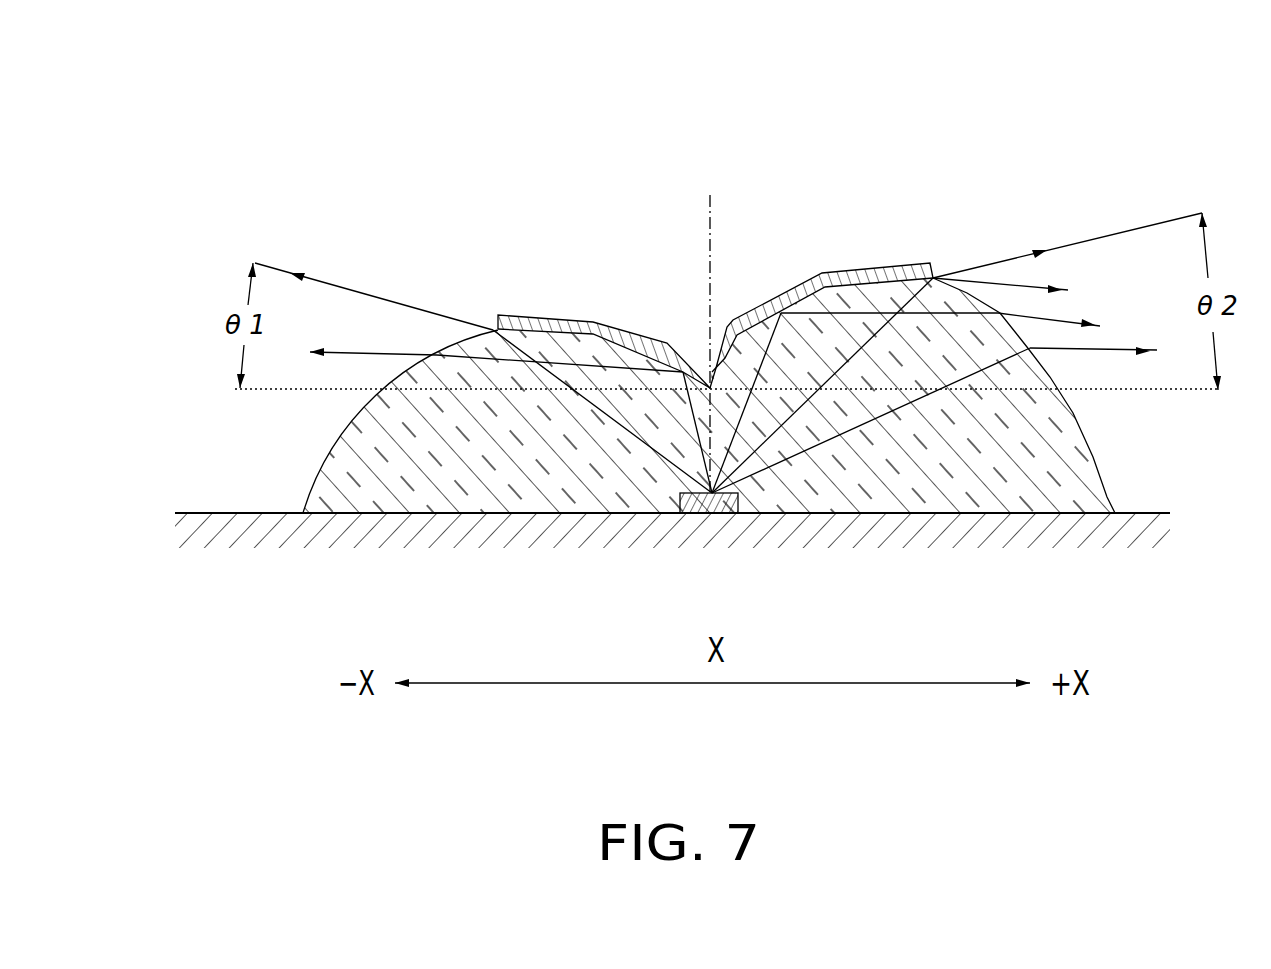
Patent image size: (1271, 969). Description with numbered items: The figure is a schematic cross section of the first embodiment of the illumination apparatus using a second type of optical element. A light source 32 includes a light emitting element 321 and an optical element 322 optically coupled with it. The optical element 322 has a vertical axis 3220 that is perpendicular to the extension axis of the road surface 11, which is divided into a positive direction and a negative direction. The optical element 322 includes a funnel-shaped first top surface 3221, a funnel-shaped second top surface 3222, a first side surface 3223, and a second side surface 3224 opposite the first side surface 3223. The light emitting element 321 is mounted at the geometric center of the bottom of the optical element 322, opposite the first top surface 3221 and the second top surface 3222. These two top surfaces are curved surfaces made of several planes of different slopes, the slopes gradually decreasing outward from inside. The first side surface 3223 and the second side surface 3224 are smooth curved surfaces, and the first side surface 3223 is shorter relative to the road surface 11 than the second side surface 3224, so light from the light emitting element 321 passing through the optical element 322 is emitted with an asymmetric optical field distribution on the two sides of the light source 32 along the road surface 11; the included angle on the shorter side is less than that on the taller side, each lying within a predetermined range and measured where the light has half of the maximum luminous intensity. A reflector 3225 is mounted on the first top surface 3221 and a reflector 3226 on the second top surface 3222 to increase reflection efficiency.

The road surface 11 is at (213, 513).
The light source 32 is at (515, 102).
The light emitting element 321 is at (735, 518).
The optical element 322 is at (524, 478).
The vertical axis 3220 is at (712, 220).
The first top surface 3221 is at (537, 315).
The second top surface 3222 is at (884, 262).
The first side surface 3223 is at (322, 462).
The second side surface 3224 is at (1098, 468).
The reflector 3225 is at (634, 335).
The reflector 3226 is at (775, 306).